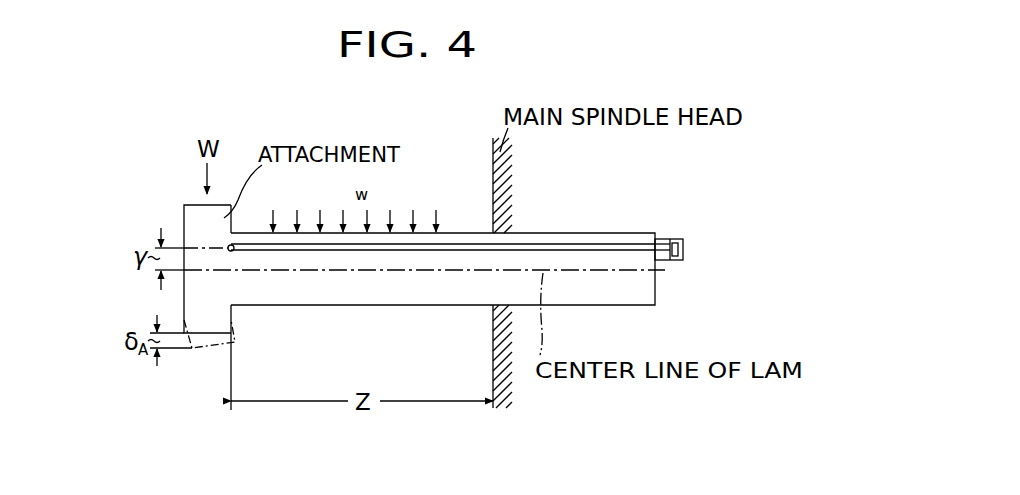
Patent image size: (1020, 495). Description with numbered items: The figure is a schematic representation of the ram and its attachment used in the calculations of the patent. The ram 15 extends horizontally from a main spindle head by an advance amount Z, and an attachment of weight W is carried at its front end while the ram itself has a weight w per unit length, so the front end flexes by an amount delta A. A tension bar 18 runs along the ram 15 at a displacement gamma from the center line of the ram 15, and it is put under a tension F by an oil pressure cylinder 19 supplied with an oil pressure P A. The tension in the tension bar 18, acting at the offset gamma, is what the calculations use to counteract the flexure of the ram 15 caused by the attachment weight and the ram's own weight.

The ram 15 is at (421, 284).
The tension bar 18 is at (563, 243).
The oil pressure cylinder 19 is at (673, 238).